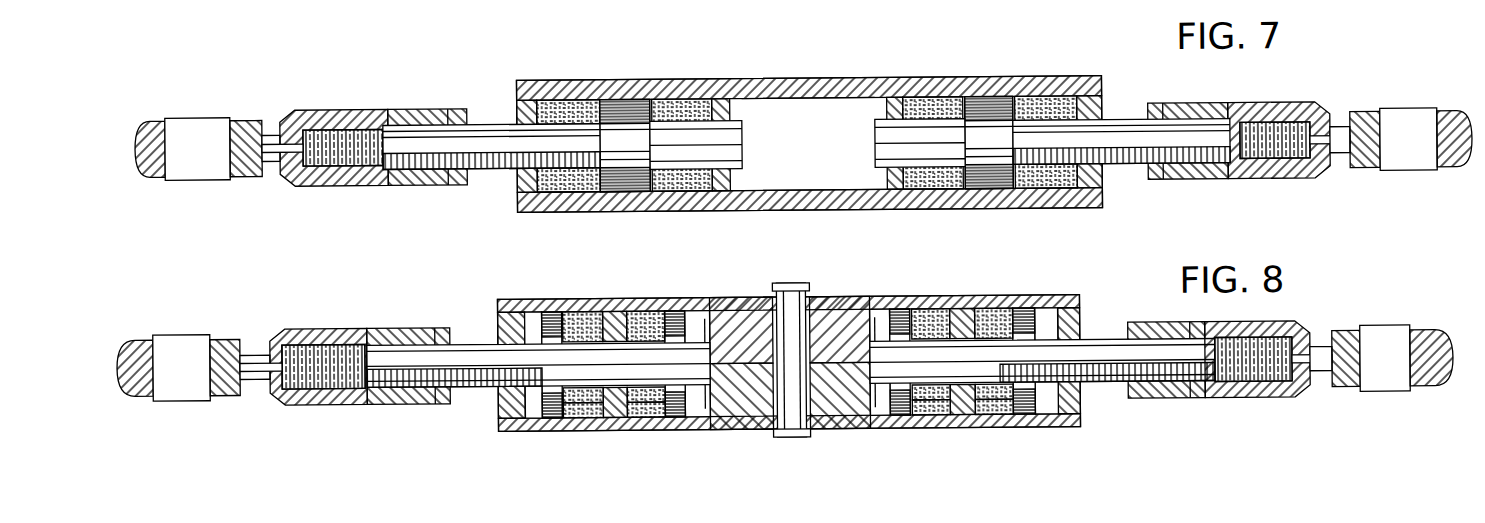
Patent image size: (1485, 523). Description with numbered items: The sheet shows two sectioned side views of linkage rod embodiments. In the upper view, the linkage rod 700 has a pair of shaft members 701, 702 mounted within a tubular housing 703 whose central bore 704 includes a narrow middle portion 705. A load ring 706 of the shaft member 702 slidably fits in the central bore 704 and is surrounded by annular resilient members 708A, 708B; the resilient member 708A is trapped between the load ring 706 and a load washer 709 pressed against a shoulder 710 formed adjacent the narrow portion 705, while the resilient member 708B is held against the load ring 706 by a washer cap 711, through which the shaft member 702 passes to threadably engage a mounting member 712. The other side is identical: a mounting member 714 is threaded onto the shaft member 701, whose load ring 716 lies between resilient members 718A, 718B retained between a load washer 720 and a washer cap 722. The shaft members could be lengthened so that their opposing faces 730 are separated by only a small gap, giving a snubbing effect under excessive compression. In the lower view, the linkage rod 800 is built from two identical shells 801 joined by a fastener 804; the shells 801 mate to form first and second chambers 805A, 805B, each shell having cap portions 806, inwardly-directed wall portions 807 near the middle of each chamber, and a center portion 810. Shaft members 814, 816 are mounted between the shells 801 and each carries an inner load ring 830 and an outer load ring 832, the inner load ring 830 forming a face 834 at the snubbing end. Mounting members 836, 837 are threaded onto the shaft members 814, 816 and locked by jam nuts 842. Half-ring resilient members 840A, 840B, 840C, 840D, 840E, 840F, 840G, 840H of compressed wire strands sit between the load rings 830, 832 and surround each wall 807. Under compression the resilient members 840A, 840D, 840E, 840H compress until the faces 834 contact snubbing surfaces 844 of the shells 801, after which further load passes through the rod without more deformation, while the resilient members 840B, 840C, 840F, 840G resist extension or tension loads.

In FIG. 7, the linkage rod 700 is at (807, 78).
In FIG. 7, the shaft member 701 is at (515, 124).
In FIG. 7, the shaft member 702 is at (1036, 170).
In FIG. 7, the tubular housing 703 is at (836, 78).
In FIG. 7, the central bore 704 is at (672, 192).
In FIG. 7, the narrow middle portion 705 is at (845, 192).
In FIG. 7, the load ring 706 is at (989, 142).
In FIG. 7, the resilient member 708A is at (935, 105).
In FIG. 7, the resilient member 708B is at (1052, 105).
In FIG. 7, the load washer 709 is at (895, 98).
In FIG. 7, the shoulder 710 is at (878, 205).
In FIG. 7, the washer cap 711 is at (1103, 102).
In FIG. 7, the mounting member 712 is at (1288, 106).
In FIG. 7, the mounting member 714 is at (355, 106).
In FIG. 7, the load ring 716 is at (625, 145).
In FIG. 7, the resilient member 718A is at (566, 108).
In FIG. 7, the resilient member 718B is at (690, 105).
In FIG. 7, the load washer 720 is at (722, 105).
In FIG. 7, the washer cap 722 is at (516, 190).
In FIG. 7, the opposing faces 730 is at (743, 143).
In FIG. 8, the linkage rod 800 is at (826, 430).
In FIG. 8, the shell 801 is at (840, 298).
In FIG. 8, the fastener 804 is at (796, 438).
In FIG. 8, the first chamber 805A is at (536, 312).
In FIG. 8, the second chamber 805B is at (1062, 404).
In FIG. 8, the cap portion 806 is at (510, 430).
In FIG. 8, the inwardly-directed wall portion 807 is at (612, 318).
In FIG. 8, the center portion 810 is at (752, 318).
In FIG. 8, the shaft member 814 is at (470, 342).
In FIG. 8, the shaft member 816 is at (1226, 384).
In FIG. 8, the inner load ring 830 is at (676, 312).
In FIG. 8, the outer load ring 832 is at (553, 312).
In FIG. 8, the face 834 is at (886, 315).
In FIG. 8, the mounting member 836 is at (305, 325).
In FIG. 8, the mounting member 837 is at (1305, 401).
In FIG. 8, the resilient member 840A is at (563, 408).
In FIG. 8, the resilient member 840B is at (657, 410).
In FIG. 8, the resilient member 840C is at (935, 398).
In FIG. 8, the resilient member 840D is at (1057, 392).
In FIG. 8, the resilient member 840E is at (590, 398).
In FIG. 8, the resilient member 840F is at (637, 407).
In FIG. 8, the resilient member 840G is at (970, 422).
In FIG. 8, the resilient member 840H is at (1047, 384).
In FIG. 8, the jam nut 842 is at (440, 402).
In FIG. 8, the snubbing surface 844 is at (700, 310).